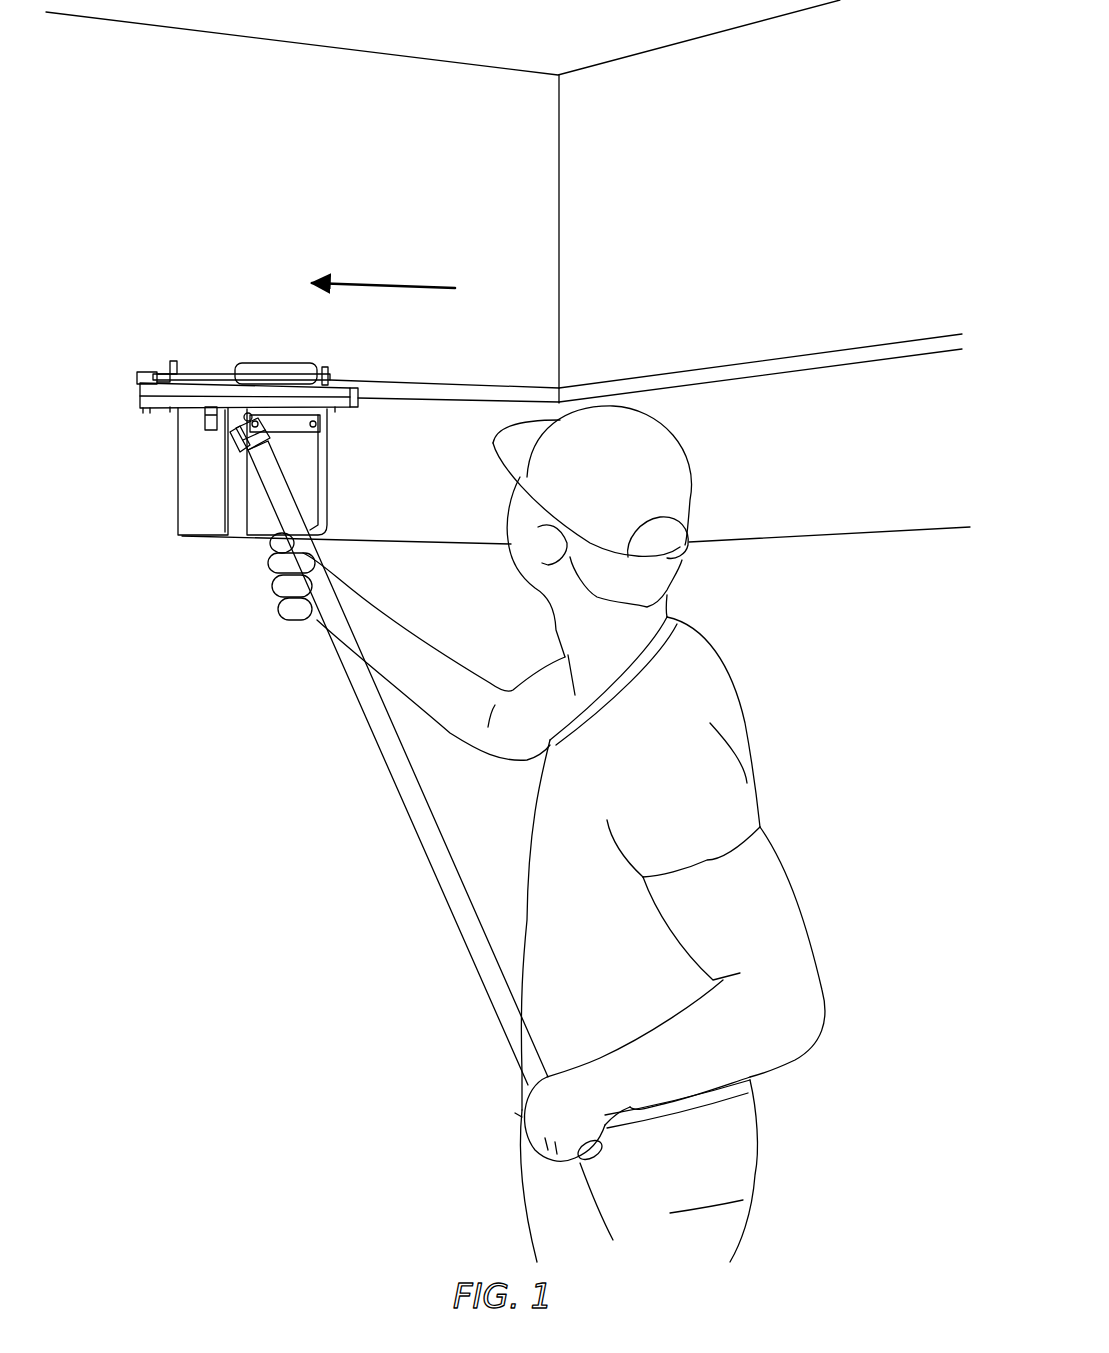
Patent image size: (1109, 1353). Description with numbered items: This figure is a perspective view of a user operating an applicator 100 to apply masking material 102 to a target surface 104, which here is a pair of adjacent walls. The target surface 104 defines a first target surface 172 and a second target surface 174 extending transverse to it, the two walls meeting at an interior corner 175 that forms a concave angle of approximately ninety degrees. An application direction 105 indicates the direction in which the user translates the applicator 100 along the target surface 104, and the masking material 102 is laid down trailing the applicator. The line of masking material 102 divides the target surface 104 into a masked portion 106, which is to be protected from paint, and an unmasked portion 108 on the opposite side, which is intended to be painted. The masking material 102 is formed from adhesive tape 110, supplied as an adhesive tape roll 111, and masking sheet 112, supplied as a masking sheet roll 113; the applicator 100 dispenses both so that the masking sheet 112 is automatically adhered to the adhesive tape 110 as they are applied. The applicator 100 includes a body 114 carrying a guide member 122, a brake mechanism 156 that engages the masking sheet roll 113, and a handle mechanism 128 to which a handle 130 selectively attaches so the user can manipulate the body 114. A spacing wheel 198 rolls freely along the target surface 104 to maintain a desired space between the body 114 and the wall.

The applicator 100 is at (113, 484).
The masking material 102 is at (720, 361).
The target surface 104 is at (150, 198).
The application direction 105 is at (375, 278).
The masked portion 106 is at (218, 770).
The unmasked portion 108 is at (118, 293).
The adhesive tape 110 is at (791, 371).
The adhesive tape roll 111 is at (272, 367).
The masking sheet 112 is at (870, 388).
The masking sheet roll 113 is at (190, 525).
The body 114 is at (140, 398).
The guide member 122 is at (300, 468).
The handle mechanism 128 is at (238, 458).
The handle 130 is at (438, 858).
The brake mechanism 156 is at (197, 418).
The first target surface 172 is at (703, 160).
The second target surface 174 is at (418, 160).
The interior corner 175 is at (557, 161).
The spacing wheel 198 is at (145, 371).